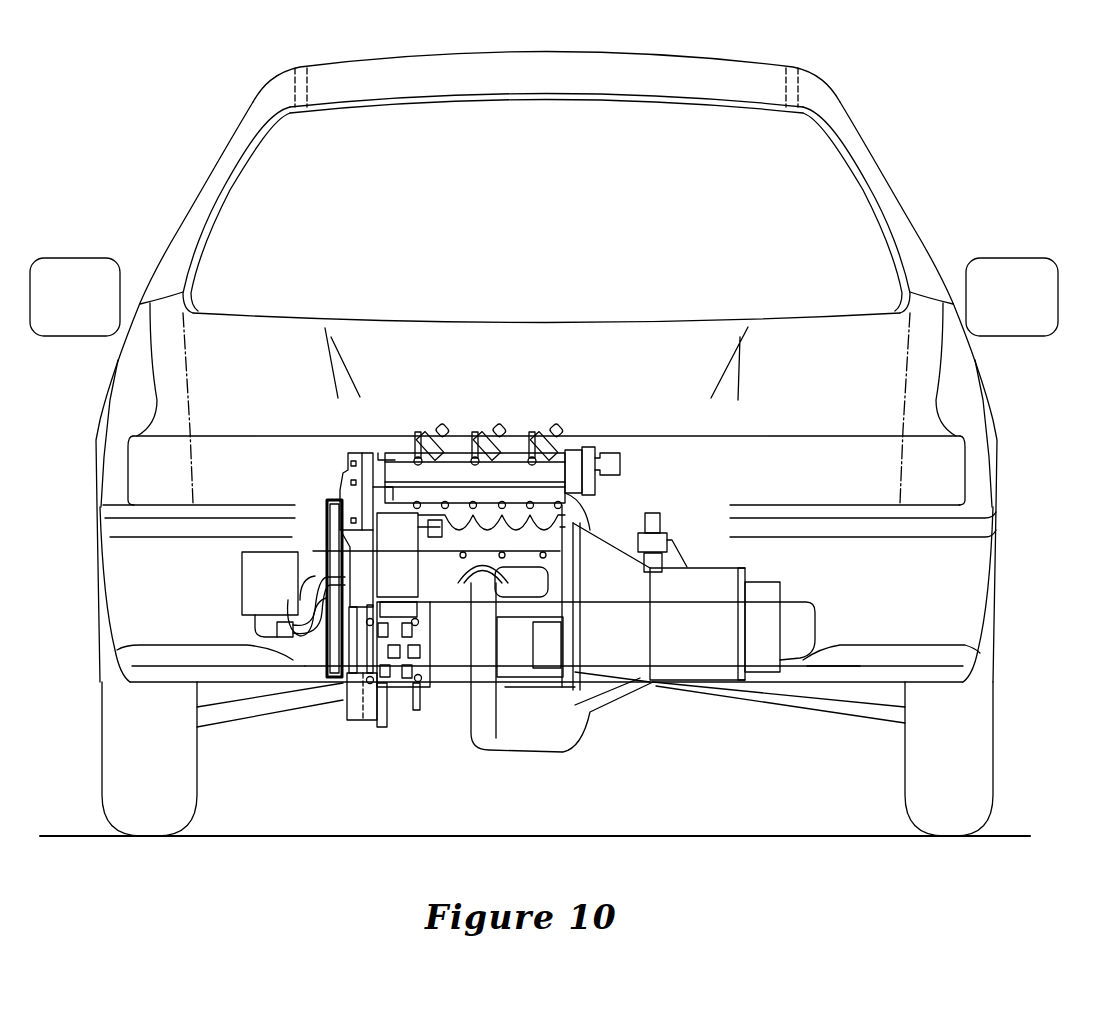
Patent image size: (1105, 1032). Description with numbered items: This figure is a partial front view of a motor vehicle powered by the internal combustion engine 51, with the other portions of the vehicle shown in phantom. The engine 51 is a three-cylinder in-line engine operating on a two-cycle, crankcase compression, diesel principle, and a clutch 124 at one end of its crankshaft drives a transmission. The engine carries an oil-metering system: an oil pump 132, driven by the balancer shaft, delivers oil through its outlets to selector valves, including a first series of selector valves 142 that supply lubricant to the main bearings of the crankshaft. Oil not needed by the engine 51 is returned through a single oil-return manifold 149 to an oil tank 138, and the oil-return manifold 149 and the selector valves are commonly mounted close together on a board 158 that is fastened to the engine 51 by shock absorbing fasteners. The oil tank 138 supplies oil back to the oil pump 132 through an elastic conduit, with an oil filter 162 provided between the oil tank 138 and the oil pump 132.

The internal combustion engine 51 is at (577, 407).
The clutch 124 is at (600, 550).
The oil tank 138 is at (242, 574).
The oil filter 162 is at (278, 642).
The oil-return manifold 149 is at (373, 663).
The oil pump 132 is at (345, 717).
The first series of selector valves 142 is at (392, 650).
The board 158 is at (433, 628).